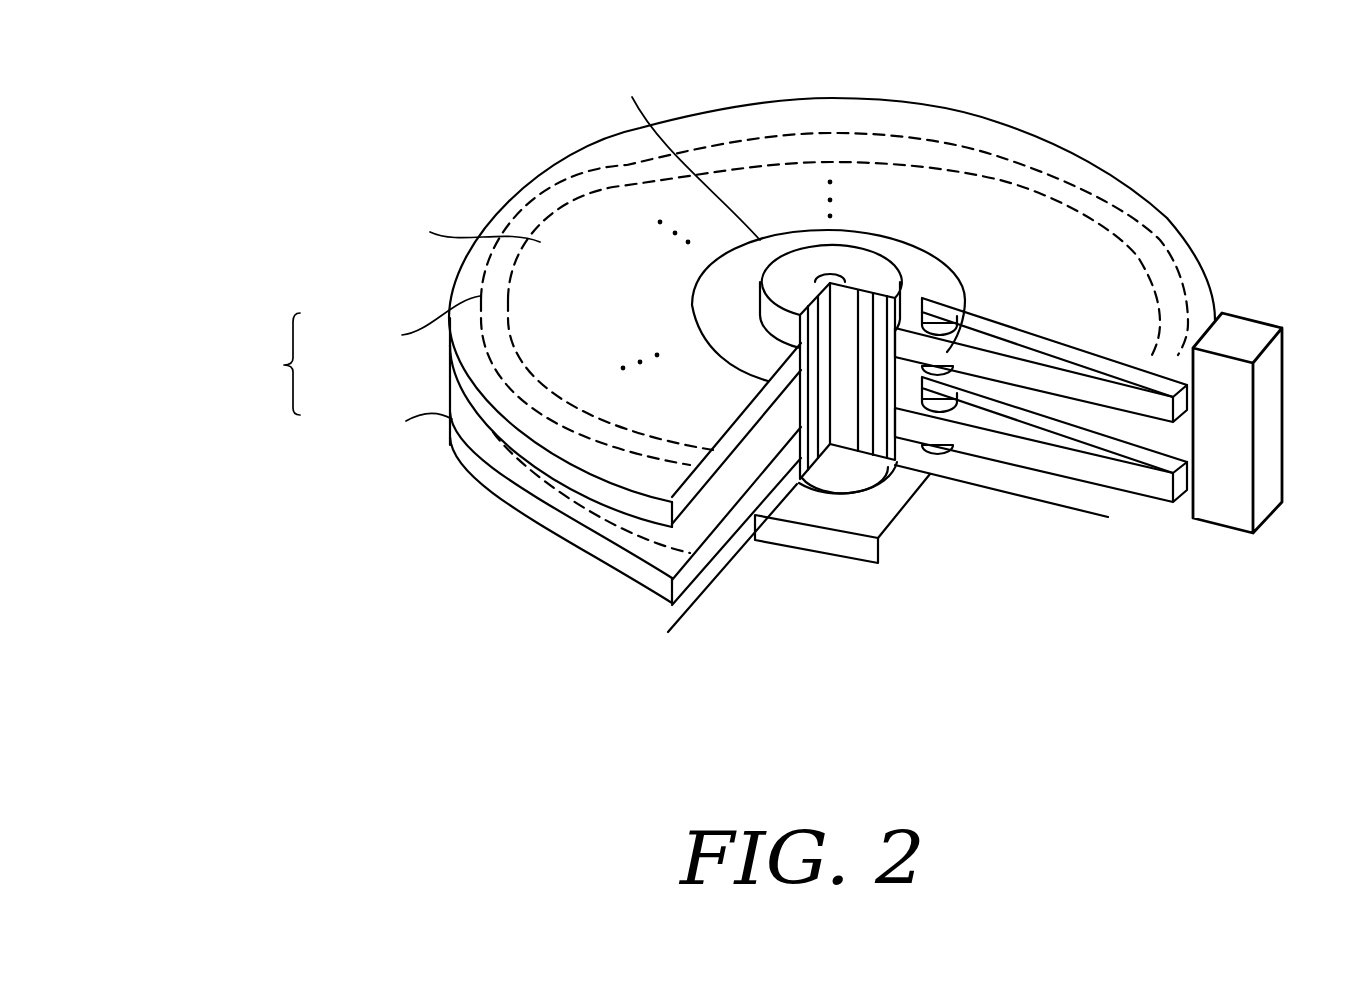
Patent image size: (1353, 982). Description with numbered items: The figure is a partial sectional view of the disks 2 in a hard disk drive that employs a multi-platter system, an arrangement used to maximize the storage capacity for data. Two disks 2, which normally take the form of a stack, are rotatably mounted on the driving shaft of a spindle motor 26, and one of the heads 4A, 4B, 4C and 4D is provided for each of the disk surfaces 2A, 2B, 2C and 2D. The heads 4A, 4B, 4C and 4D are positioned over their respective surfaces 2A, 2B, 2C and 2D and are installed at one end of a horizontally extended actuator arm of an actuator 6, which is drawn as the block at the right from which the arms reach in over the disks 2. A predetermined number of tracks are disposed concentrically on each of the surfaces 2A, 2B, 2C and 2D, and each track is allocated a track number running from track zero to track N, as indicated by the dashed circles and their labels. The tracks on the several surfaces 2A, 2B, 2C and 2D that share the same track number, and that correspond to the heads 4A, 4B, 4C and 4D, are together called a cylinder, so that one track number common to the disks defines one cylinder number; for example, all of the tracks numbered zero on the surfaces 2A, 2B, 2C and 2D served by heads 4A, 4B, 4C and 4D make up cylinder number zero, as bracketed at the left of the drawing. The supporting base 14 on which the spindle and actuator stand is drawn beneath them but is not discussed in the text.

The disks 2 is at (1093, 157).
The disk surface 2A is at (753, 441).
The disk surface 2B is at (780, 492).
The disk surface 2C is at (766, 501).
The disk surface 2D is at (783, 400).
The head 4A is at (945, 321).
The head 4B is at (950, 366).
The head 4C is at (950, 403).
The head 4D is at (948, 445).
The actuator 6 is at (1223, 517).
The base 14 is at (850, 547).
The spindle motor 26 is at (870, 264).